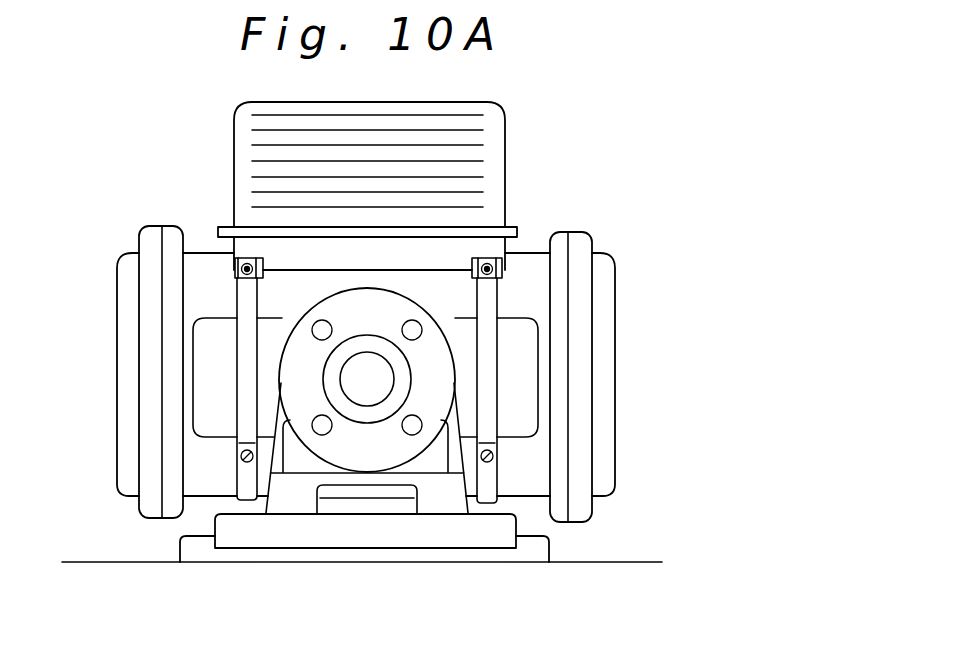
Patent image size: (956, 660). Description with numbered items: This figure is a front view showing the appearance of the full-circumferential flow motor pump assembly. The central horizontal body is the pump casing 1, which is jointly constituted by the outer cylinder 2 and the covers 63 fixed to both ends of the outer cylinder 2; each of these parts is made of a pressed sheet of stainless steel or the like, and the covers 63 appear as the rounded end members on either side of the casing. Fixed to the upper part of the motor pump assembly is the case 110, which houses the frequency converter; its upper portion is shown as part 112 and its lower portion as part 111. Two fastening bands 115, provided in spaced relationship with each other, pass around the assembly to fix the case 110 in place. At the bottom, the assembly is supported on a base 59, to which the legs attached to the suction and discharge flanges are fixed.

The pump casing 1 is at (195, 247).
The outer cylinder 2 is at (522, 277).
The base 59 is at (398, 538).
The covers 63 is at (124, 332).
The case 110 is at (443, 181).
The terminal box body 111 is at (497, 252).
The terminal box cover 112 is at (502, 158).
The fastening bands 115 is at (243, 302).